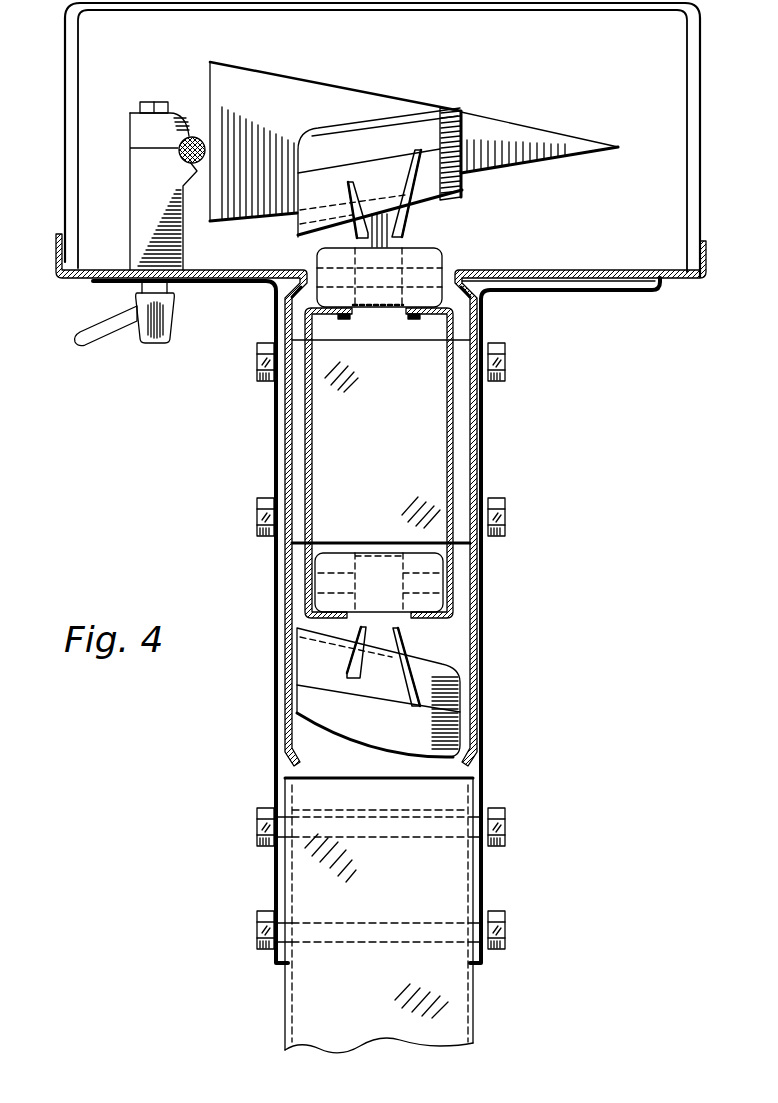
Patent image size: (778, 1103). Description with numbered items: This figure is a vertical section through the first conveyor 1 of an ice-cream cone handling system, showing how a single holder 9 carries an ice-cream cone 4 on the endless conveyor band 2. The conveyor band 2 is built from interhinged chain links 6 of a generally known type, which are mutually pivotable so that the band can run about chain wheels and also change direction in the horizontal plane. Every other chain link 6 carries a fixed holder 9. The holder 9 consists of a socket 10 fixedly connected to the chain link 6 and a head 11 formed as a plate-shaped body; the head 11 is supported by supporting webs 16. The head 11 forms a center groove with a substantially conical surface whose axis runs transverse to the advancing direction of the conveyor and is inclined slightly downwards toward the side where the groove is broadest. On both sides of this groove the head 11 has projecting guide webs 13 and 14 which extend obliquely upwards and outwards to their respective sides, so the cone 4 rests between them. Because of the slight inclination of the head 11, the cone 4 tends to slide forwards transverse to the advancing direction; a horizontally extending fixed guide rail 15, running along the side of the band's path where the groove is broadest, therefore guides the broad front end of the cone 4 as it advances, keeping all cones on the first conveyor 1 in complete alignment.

The first conveyor 1 is at (538, 286).
The conveyor band 2 is at (437, 258).
The ice-cream cone 4 is at (258, 92).
The chain link 6 is at (332, 298).
The holder 9 is at (483, 175).
The socket 10 is at (407, 237).
The head 11 is at (447, 668).
The guide web 13 is at (445, 120).
The guide web 14 is at (458, 742).
The guide rail 15 is at (191, 123).
The supporting webs 16 is at (358, 196).